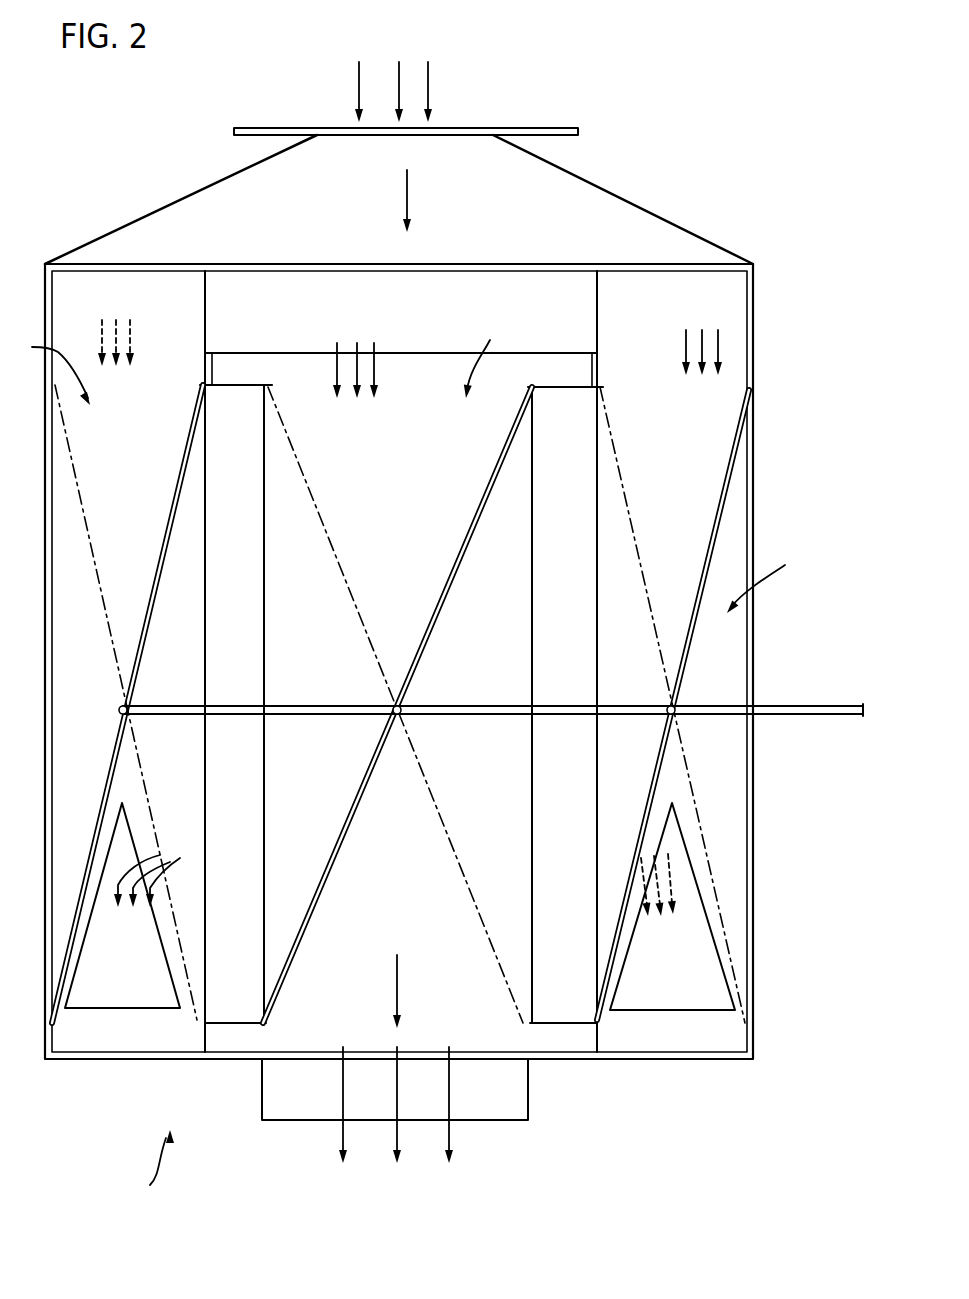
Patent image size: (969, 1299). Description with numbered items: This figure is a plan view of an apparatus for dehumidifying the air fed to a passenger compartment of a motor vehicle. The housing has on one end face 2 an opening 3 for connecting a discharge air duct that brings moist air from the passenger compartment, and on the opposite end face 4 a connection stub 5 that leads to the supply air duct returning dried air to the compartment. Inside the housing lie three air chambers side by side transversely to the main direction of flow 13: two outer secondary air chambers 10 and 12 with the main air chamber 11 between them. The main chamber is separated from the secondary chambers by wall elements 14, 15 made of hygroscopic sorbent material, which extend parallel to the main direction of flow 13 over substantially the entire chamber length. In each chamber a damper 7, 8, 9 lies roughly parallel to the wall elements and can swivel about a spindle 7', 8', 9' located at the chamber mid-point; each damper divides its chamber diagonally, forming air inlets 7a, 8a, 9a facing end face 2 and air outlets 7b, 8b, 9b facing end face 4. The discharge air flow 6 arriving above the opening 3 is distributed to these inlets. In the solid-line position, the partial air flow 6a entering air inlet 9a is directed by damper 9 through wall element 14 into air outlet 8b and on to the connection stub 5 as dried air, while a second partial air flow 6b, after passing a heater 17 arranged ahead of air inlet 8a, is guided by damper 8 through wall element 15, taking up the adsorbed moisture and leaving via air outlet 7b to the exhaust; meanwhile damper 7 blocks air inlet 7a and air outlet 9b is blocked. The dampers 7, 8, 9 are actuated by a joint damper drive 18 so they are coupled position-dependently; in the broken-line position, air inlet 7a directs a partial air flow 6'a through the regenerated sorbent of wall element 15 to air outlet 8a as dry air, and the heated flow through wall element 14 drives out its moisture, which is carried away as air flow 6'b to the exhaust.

The end face 2 is at (664, 292).
The opening 3 is at (470, 128).
The end face 4 is at (150, 1170).
The connection stub 5 is at (518, 1100).
The gas flow 6 is at (410, 90).
The partial air flow 6a is at (700, 345).
The second partial air flow 6b is at (372, 365).
The partial air flow 6'a is at (104, 327).
The air flow 6'b is at (640, 856).
The damper 7 is at (127, 704).
The damper 8 is at (397, 705).
The damper 9 is at (691, 705).
The spindle 7' is at (147, 689).
The spindle 8' is at (420, 689).
The spindle 9' is at (694, 691).
The air inlet 7a is at (133, 459).
The air outlet 7b is at (140, 997).
The air inlet 8a is at (395, 459).
The air outlet 8b is at (355, 997).
The air inlet 9a is at (681, 459).
The air outlet 9b is at (660, 1003).
The secondary air chamber 10 is at (49, 370).
The main air chamber 11 is at (484, 355).
The secondary air chamber 12 is at (772, 582).
The main direction of flow 13 is at (409, 186).
The wall element 14 is at (560, 398).
The wall element 15 is at (232, 396).
The heater 17 is at (428, 324).
The damper drive 18 is at (802, 714).